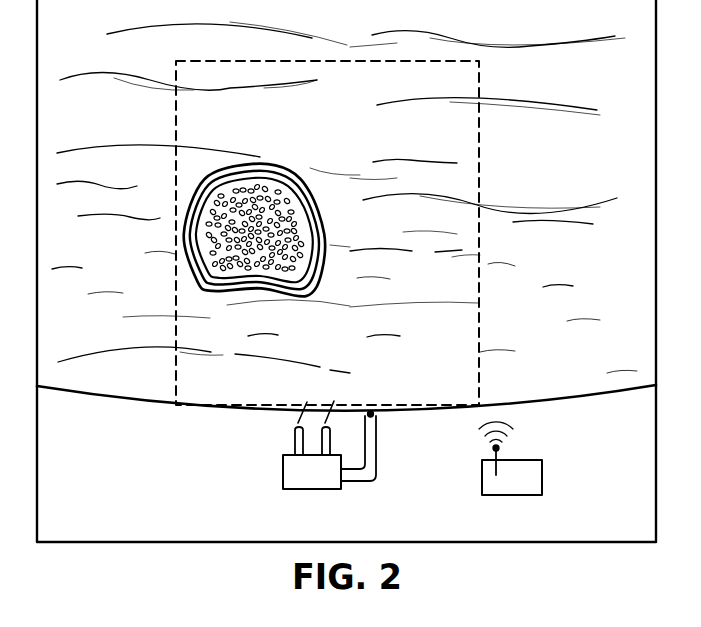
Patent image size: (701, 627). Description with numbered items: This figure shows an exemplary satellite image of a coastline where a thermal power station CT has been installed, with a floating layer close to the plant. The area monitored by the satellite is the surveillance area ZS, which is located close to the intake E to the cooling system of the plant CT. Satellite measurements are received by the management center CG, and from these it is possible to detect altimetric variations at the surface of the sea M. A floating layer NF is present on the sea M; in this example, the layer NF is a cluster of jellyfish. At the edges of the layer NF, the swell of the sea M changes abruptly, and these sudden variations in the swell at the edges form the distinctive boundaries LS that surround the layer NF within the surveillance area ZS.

The floating layer NF is at (271, 190).
The distinctive boundaries LS is at (320, 235).
The sea M is at (554, 205).
The surveillance area ZS is at (480, 140).
The intake E is at (372, 411).
The thermal power station CT is at (283, 471).
The management center CG is at (542, 470).